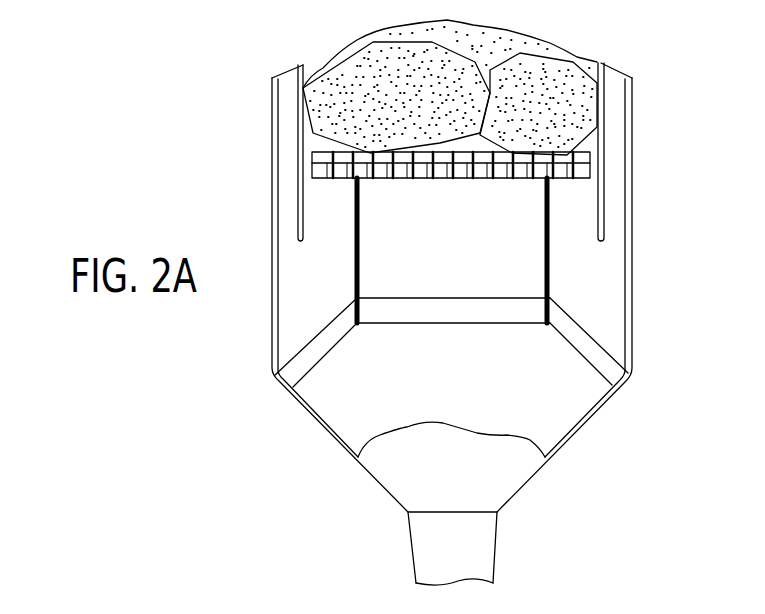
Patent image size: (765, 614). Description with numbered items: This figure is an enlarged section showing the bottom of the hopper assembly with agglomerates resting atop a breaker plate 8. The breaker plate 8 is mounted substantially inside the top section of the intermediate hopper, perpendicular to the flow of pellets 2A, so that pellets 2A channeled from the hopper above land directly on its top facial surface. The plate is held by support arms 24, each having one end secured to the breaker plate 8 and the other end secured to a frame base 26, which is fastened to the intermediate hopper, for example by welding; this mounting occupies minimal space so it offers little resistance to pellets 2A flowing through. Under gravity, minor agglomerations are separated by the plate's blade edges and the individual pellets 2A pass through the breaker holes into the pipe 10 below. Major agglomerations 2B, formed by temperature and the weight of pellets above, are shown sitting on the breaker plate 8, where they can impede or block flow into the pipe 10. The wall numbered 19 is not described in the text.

The pellets 2A is at (547, 43).
The major agglomerations 2B is at (324, 80).
The breaker plate 8 is at (484, 184).
The pipe 10 is at (408, 546).
The vessel wall 19 is at (272, 292).
The support arms 24 is at (551, 244).
The frame base 26 is at (588, 343).